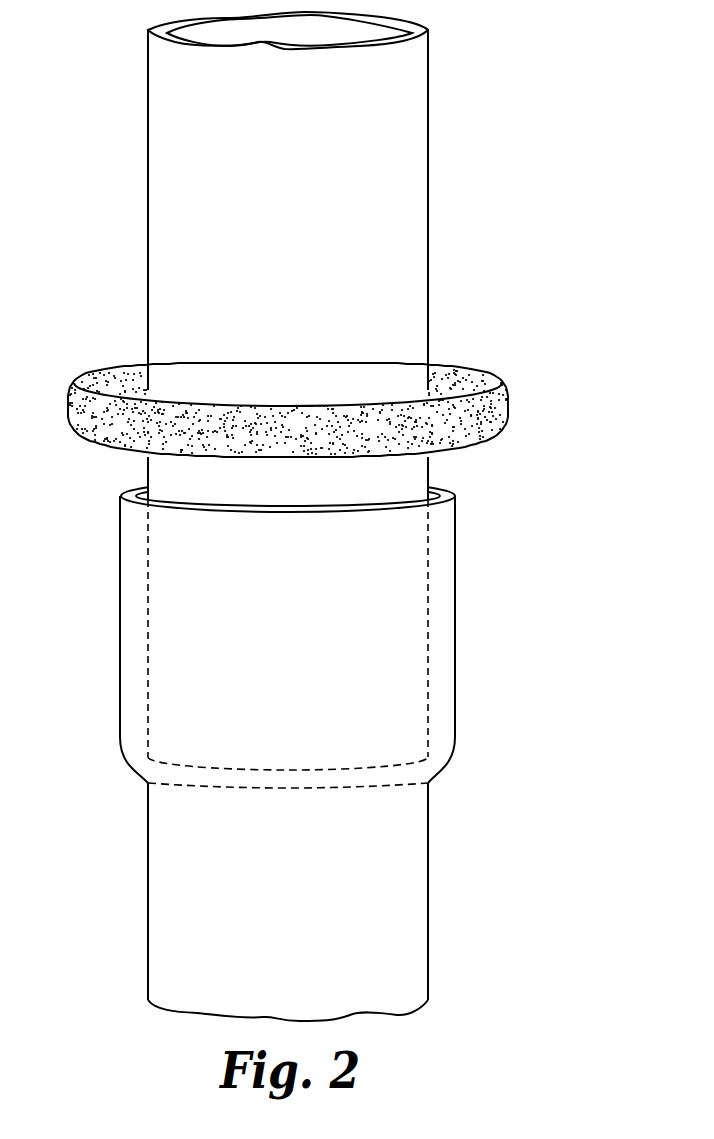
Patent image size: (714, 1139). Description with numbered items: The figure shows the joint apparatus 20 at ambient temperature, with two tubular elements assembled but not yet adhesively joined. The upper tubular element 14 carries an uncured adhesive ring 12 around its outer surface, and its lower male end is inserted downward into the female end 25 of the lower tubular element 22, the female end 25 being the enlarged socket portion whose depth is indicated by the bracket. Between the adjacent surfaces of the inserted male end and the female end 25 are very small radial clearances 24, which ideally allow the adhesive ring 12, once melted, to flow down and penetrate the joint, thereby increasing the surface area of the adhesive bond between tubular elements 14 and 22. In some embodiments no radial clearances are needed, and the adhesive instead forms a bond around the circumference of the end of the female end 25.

The joint apparatus 20 is at (518, 41).
The tubular element 14 is at (288, 384).
The uncured adhesive ring 12 is at (487, 403).
The radial clearances 24 is at (430, 490).
The female end 25 is at (106, 490).
The tubular element 22 is at (288, 889).